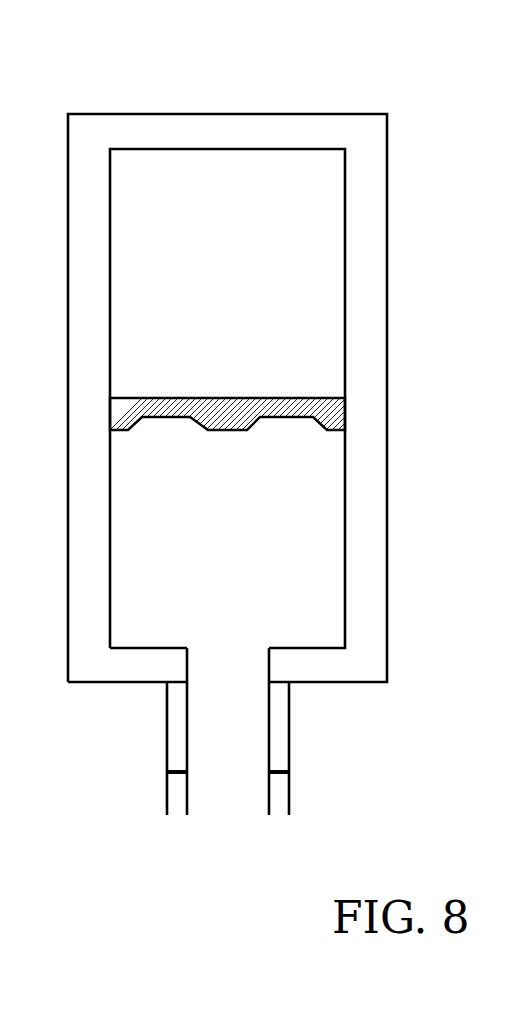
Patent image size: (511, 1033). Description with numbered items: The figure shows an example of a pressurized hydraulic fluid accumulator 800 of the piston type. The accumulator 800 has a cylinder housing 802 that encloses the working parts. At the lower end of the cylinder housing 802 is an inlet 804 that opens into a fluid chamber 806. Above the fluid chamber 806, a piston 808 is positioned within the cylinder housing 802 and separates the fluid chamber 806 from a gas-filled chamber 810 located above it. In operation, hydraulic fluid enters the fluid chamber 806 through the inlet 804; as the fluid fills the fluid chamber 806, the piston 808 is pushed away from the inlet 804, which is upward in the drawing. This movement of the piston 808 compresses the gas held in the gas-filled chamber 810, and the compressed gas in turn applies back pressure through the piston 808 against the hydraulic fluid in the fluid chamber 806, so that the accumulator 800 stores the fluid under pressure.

The accumulator 800 is at (442, 122).
The cylinder housing 802 is at (366, 367).
The inlet 804 is at (228, 807).
The fluid chamber 806 is at (300, 563).
The piston 808 is at (155, 398).
The gas-filled chamber 810 is at (313, 252).